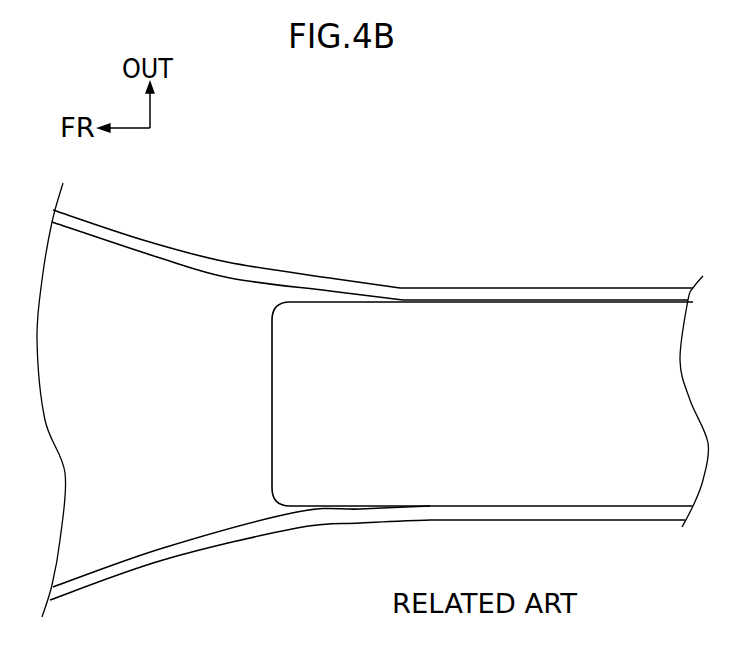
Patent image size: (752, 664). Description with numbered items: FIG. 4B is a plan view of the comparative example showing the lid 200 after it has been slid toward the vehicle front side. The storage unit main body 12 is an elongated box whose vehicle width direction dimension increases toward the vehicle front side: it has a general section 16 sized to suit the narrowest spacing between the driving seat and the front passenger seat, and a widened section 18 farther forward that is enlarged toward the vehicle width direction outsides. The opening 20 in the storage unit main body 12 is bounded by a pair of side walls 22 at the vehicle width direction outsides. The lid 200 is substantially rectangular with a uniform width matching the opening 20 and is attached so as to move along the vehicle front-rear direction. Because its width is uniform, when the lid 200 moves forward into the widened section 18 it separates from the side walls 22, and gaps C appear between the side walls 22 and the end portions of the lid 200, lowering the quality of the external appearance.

The storage unit main body 12 is at (227, 262).
The general section 16 is at (503, 287).
The widened section 18 is at (142, 235).
The opening 20 is at (230, 270).
The side walls 22 is at (160, 252).
The lid 200 is at (488, 387).
The gaps C is at (308, 297).